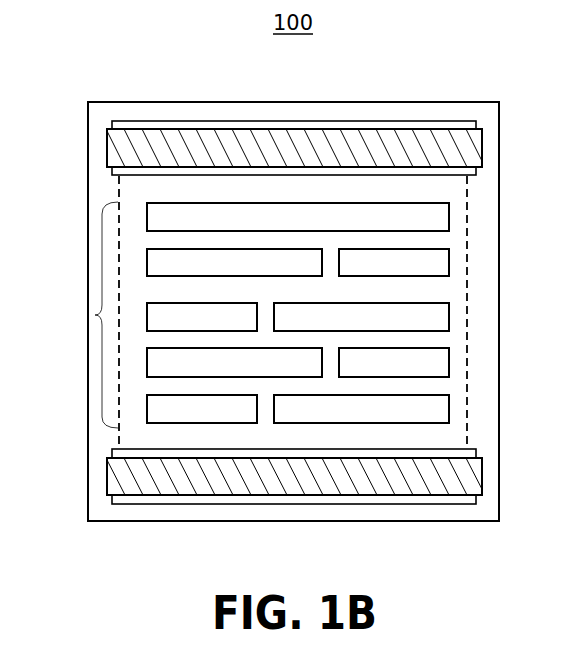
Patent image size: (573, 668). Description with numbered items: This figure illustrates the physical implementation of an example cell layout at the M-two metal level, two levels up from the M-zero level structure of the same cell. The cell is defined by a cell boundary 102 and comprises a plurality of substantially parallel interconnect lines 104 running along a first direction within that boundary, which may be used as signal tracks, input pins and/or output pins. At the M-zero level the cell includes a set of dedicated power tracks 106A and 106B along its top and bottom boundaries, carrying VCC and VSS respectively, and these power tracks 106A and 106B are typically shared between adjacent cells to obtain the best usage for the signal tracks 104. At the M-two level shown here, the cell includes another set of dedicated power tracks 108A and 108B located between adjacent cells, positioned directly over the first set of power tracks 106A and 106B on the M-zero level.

The cell boundary 102 is at (118, 190).
The interconnect lines 104 is at (95, 315).
The power track 106A is at (193, 121).
The power track 106B is at (188, 505).
The power track 108A is at (342, 129).
The power track 108B is at (377, 496).